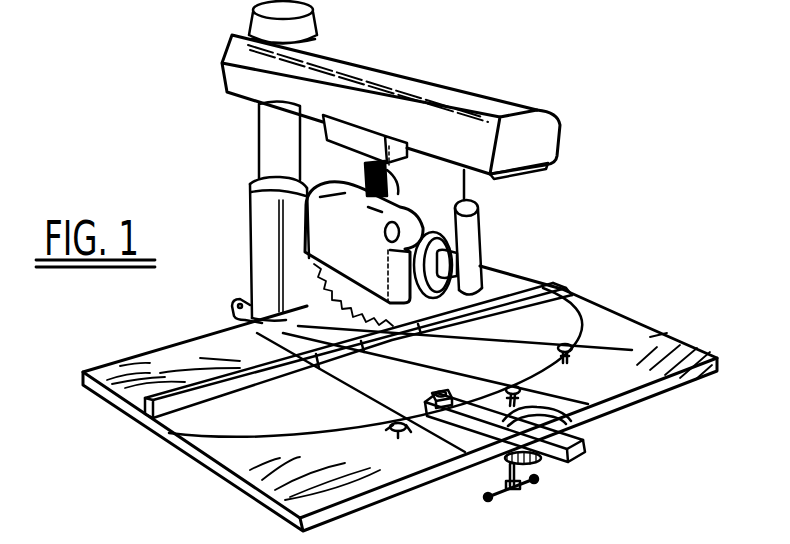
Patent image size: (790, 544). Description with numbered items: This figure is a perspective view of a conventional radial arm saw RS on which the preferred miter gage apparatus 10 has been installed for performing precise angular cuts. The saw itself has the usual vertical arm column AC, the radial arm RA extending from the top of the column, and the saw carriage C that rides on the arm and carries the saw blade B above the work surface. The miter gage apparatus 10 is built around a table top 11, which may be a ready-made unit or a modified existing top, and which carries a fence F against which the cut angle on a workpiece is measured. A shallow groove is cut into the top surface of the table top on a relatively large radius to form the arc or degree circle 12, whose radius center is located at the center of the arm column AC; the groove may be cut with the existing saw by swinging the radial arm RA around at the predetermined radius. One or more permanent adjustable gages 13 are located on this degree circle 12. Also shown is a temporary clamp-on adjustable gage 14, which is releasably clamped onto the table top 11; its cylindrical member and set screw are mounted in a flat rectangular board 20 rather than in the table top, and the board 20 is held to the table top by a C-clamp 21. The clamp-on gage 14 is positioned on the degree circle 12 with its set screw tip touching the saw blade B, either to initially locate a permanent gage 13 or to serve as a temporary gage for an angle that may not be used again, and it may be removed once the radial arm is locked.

The radial arm saw RS is at (455, 61).
The radial arm RA is at (352, 63).
The arm column AC is at (275, 153).
The saw carriage C is at (435, 180).
The saw blade B is at (338, 304).
The fence F is at (495, 302).
The miter gage apparatus 10 is at (642, 310).
The table top 11 is at (210, 462).
The arc or degree circle 12 is at (217, 431).
The permanent adjustable gage 13 is at (395, 426).
The clamp-on adjustable gage 14 is at (433, 397).
The flat rectangular board 20 is at (571, 455).
The C-clamp 21 is at (551, 408).